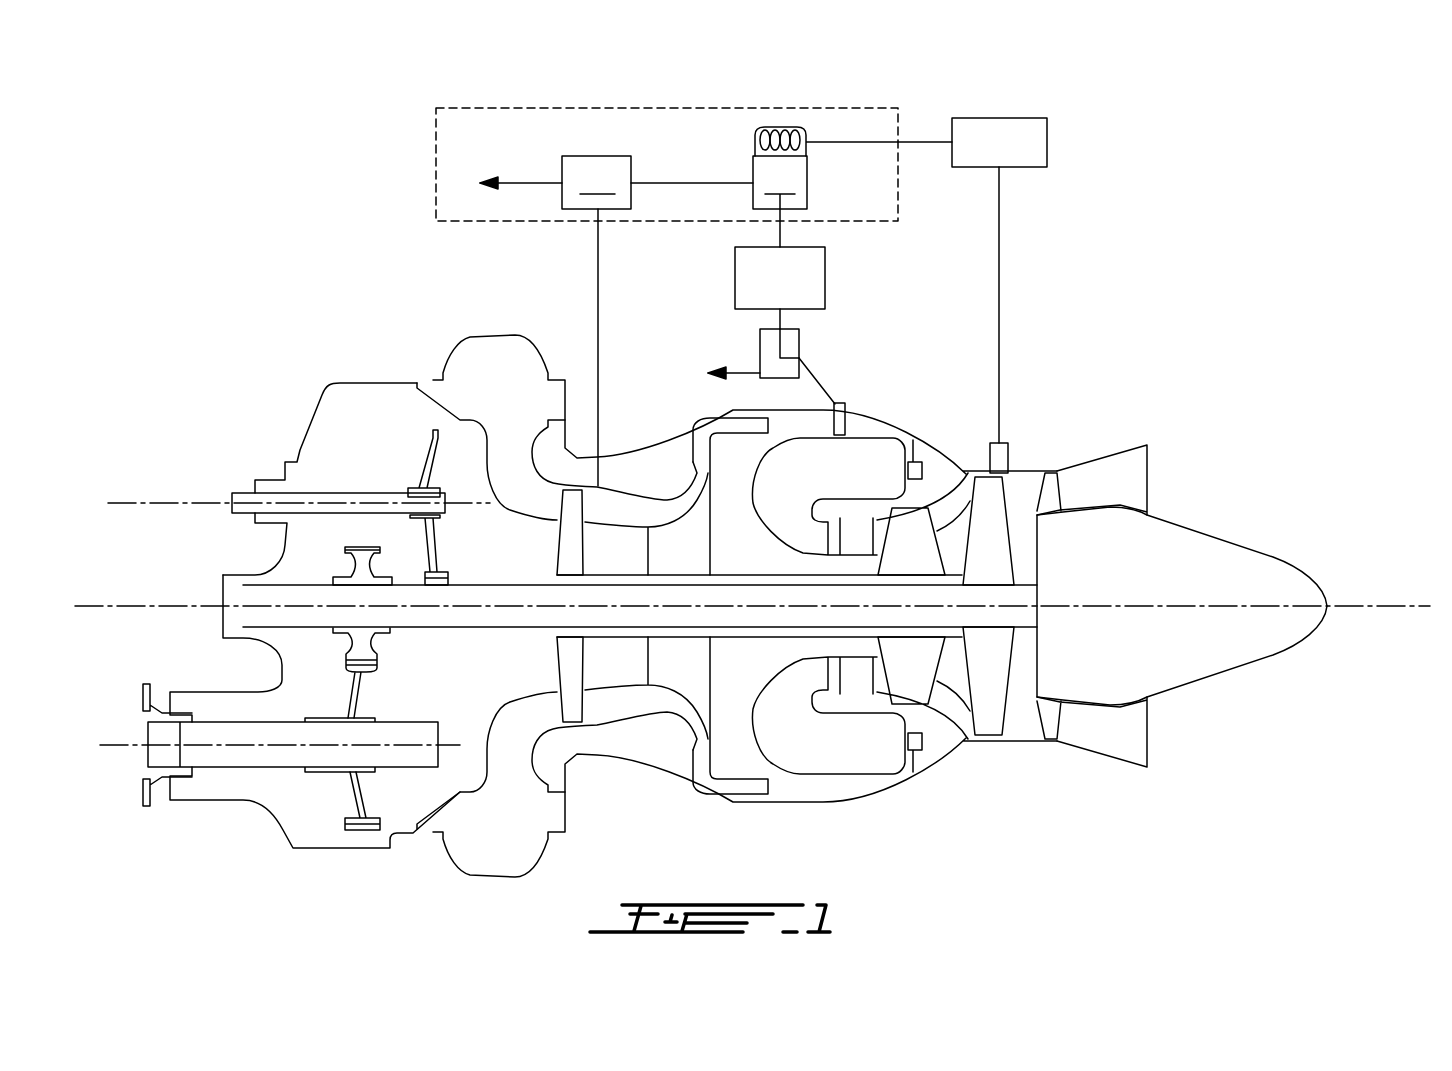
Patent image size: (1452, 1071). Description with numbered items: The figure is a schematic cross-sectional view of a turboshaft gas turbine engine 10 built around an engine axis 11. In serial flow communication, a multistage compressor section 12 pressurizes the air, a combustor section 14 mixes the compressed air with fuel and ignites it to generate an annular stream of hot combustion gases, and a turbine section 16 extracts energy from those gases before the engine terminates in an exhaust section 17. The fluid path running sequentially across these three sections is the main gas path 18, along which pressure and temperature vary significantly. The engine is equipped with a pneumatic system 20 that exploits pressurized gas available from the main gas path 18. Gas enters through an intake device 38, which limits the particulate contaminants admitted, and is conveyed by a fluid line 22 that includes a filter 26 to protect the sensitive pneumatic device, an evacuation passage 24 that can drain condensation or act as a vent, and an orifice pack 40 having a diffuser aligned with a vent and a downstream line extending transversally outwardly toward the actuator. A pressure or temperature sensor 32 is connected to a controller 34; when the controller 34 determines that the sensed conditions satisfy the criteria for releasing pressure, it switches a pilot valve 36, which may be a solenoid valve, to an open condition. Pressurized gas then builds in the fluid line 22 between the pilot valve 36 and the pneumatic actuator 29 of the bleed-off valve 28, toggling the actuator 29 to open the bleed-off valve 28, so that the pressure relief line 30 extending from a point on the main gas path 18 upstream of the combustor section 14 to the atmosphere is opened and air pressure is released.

The turbine engine 10 is at (1098, 306).
The engine axis 11 is at (1388, 596).
The compressor section 12 is at (627, 470).
The combustor section 14 is at (883, 440).
The turbine section 16 is at (962, 476).
The exhaust section 17 is at (1154, 432).
The main gas path 18 is at (664, 494).
The pneumatic system 20 is at (683, 108).
The fluid line 22 is at (725, 183).
The evacuation passage 24 is at (742, 372).
The filter 26 is at (735, 275).
The bleed-off valve 28 is at (598, 156).
The pneumatic actuator 29 is at (652, 183).
The pressure relief line 30 is at (597, 277).
The pressure or temperature sensor 32 is at (1008, 457).
The controller 34 is at (998, 132).
The pilot valve 36 is at (807, 181).
The intake device 38 is at (838, 412).
The orifice pack 40 is at (800, 342).